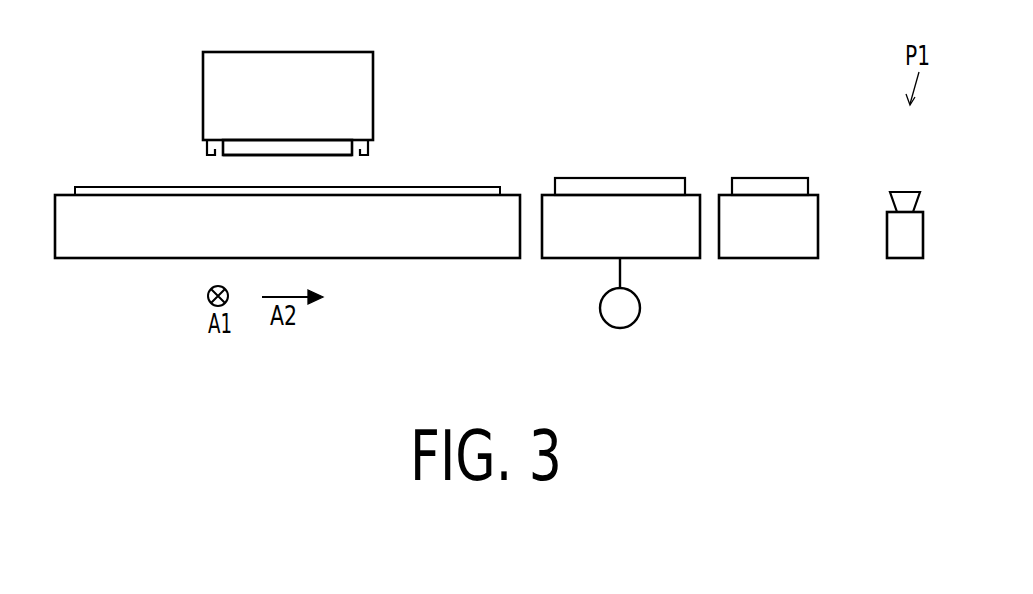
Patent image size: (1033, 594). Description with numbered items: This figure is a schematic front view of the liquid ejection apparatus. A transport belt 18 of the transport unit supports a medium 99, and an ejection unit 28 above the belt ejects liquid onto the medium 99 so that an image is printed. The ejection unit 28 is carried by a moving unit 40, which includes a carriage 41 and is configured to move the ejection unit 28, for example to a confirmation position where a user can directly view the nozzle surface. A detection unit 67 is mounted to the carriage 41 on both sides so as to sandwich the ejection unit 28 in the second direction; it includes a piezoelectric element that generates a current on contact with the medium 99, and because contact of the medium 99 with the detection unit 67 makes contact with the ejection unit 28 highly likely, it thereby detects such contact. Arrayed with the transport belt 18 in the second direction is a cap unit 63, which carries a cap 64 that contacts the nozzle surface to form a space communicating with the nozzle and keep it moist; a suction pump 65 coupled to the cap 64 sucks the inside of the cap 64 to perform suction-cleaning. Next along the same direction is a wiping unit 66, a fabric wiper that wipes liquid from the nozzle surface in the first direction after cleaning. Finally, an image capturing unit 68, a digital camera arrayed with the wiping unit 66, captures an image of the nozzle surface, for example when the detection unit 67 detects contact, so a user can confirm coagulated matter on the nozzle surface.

The transport belt 18 is at (63, 194).
The medium 99 is at (107, 187).
The moving unit 40 is at (242, 52).
The carriage 41 is at (306, 62).
The detection unit 67 is at (205, 150).
The ejection unit 28 is at (290, 156).
The cap unit 63 is at (586, 160).
The cap 64 is at (652, 178).
The suction pump 65 is at (604, 322).
The wiping unit 66 is at (766, 178).
The image capturing unit 68 is at (905, 261).